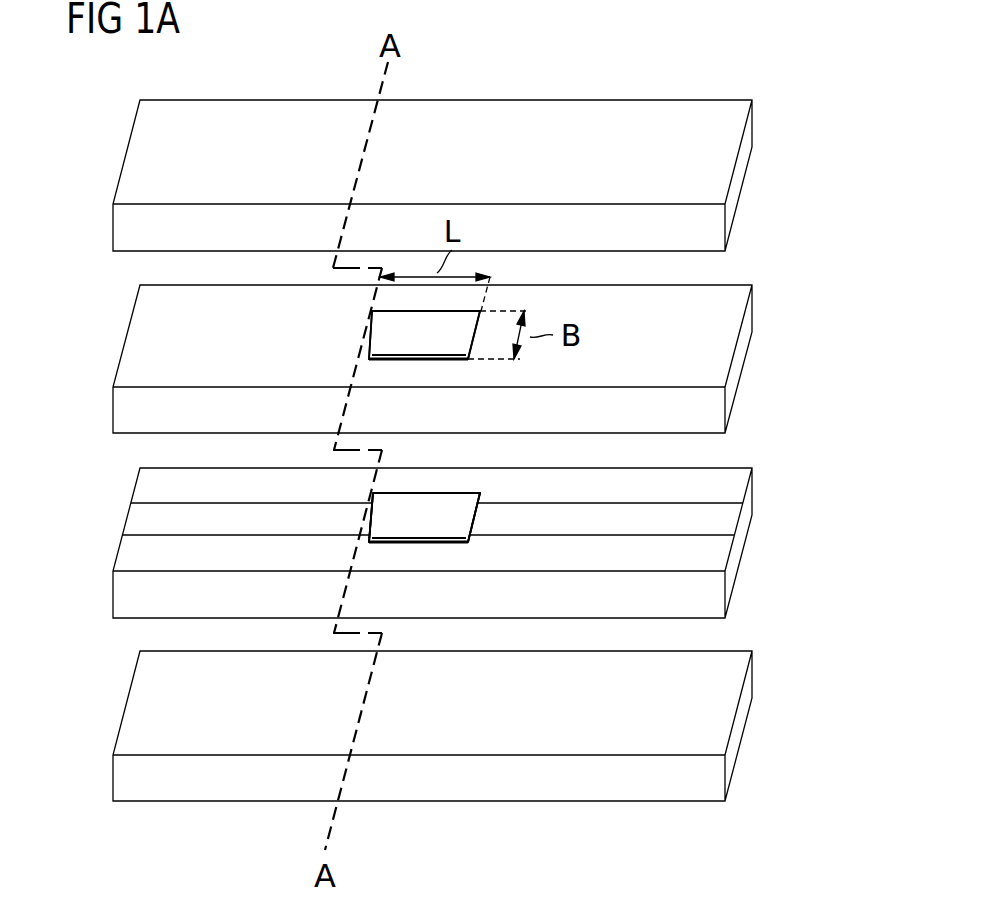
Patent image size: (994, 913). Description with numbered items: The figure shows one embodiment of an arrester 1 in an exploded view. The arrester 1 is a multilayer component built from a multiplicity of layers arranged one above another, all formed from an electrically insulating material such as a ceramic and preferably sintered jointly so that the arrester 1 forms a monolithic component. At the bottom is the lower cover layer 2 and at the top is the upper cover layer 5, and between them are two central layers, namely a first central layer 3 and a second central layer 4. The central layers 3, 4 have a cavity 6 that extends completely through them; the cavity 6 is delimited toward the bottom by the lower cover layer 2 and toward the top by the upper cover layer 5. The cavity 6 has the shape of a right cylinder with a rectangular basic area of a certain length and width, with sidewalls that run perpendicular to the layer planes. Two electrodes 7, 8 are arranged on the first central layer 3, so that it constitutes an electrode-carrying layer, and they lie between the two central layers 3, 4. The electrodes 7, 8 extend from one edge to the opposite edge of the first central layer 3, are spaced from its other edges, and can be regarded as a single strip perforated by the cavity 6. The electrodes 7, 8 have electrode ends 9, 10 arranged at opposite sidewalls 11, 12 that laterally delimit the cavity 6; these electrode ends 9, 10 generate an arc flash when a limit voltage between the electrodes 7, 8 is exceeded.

The arrester 1 is at (697, 56).
The lower cover layer 2 is at (720, 735).
The first central layer 3 is at (722, 550).
The second central layer 4 is at (717, 359).
The upper cover layer 5 is at (717, 178).
The cavity 6 is at (410, 343).
The electrode 7 is at (135, 521).
The electrode 8 is at (735, 512).
The electrode end 9 is at (367, 509).
The electrode end 10 is at (478, 506).
The sidewall 11 is at (367, 334).
The sidewall 12 is at (472, 352).